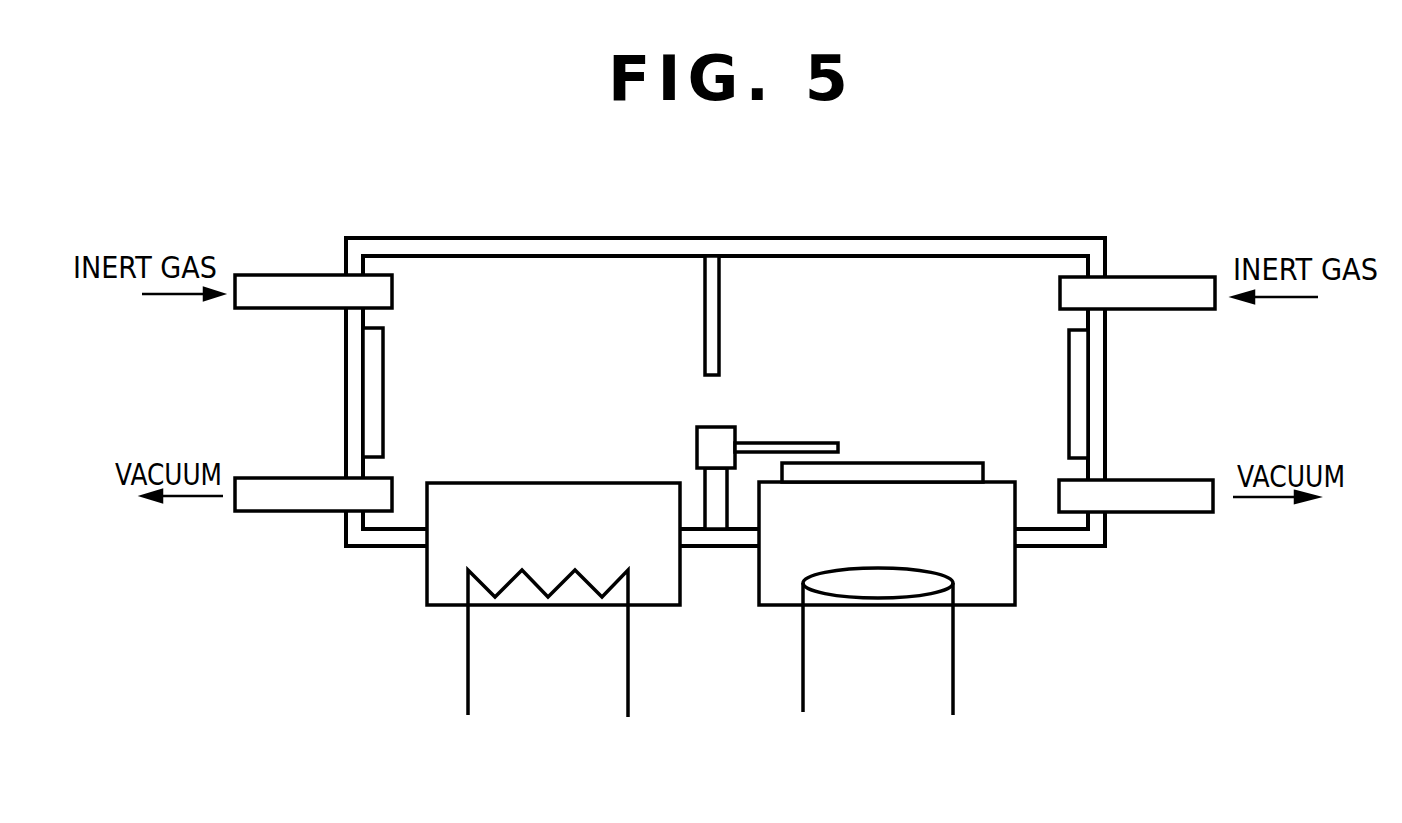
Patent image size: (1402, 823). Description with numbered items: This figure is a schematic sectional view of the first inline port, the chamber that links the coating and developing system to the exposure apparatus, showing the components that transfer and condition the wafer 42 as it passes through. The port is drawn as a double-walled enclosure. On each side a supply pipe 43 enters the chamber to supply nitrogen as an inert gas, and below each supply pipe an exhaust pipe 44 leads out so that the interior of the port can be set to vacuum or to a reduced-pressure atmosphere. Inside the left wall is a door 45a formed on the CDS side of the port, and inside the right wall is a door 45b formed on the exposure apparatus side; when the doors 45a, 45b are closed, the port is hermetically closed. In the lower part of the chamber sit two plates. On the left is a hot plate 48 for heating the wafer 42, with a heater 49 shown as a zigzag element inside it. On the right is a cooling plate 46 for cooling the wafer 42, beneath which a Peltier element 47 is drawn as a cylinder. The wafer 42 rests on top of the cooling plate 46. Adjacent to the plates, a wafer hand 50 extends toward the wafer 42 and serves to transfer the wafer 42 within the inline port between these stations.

The wafer 42 is at (877, 463).
The supply pipe 43 is at (285, 273).
The exhaust pipe 44 is at (288, 513).
The door 45a is at (383, 367).
The door 45b is at (1068, 370).
The cooling plate 46 is at (1002, 610).
The Peltier element 47 is at (896, 592).
The hot plate 48 is at (669, 608).
The heater 49 is at (507, 587).
The wafer hand 50 is at (808, 443).